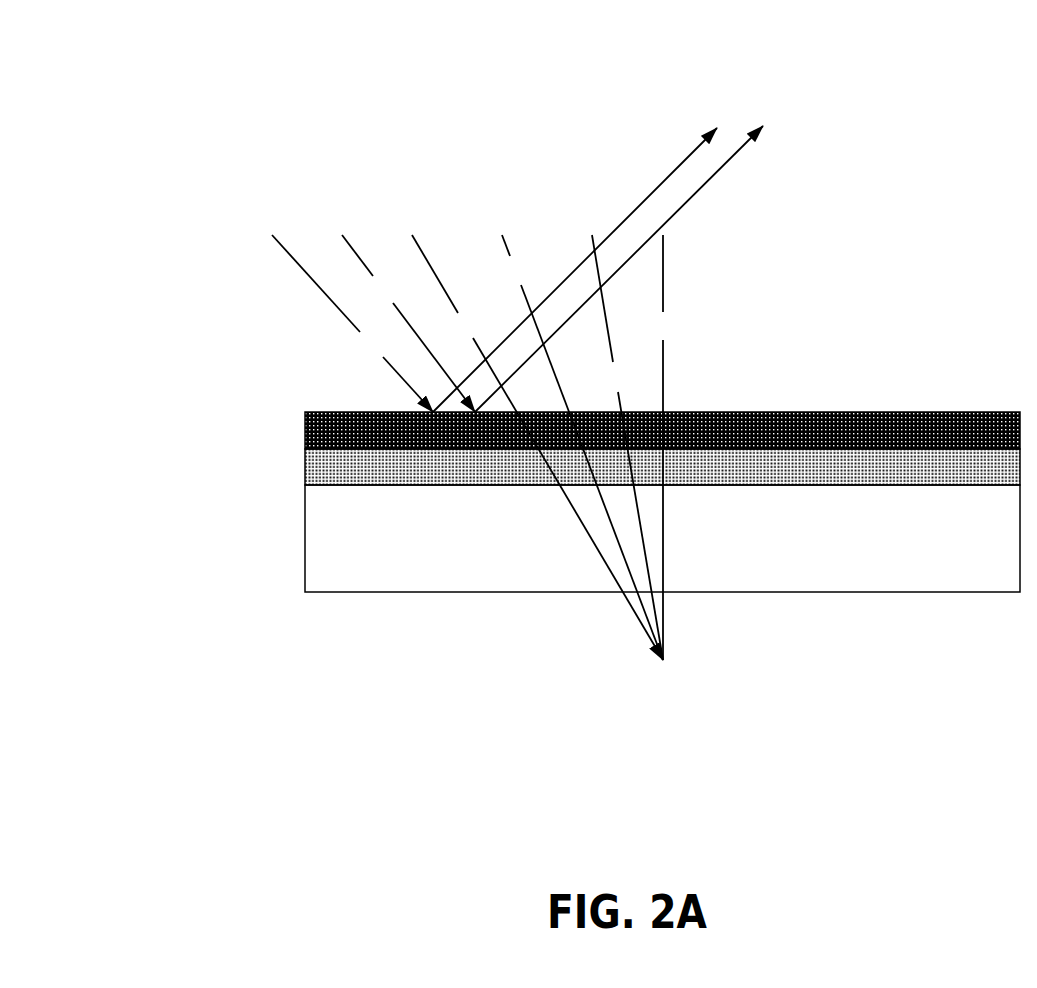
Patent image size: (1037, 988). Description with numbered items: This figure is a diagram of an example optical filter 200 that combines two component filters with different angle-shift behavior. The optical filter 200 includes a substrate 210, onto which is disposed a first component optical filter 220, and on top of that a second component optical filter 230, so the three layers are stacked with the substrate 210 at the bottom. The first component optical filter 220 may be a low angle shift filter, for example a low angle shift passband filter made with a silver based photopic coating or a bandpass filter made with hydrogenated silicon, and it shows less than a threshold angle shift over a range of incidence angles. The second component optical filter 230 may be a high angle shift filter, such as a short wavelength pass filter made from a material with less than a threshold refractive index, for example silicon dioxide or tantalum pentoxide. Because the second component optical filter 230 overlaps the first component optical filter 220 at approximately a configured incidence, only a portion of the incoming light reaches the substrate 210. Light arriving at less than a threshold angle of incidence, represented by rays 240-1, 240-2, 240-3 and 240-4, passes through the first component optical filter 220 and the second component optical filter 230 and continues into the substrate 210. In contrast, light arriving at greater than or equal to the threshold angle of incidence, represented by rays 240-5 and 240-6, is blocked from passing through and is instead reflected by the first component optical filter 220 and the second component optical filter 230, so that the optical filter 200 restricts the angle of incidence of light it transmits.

The optical filter 200 is at (122, 32).
The substrate 210 is at (932, 550).
The first component optical filter 220 is at (932, 476).
The second component optical filter 230 is at (932, 443).
The ray 240-1 is at (661, 447).
The ray 240-2 is at (623, 447).
The ray 240-3 is at (577, 447).
The ray 240-4 is at (537, 447).
The ray 240-5 is at (552, 269).
The ray 240-6 is at (494, 270).